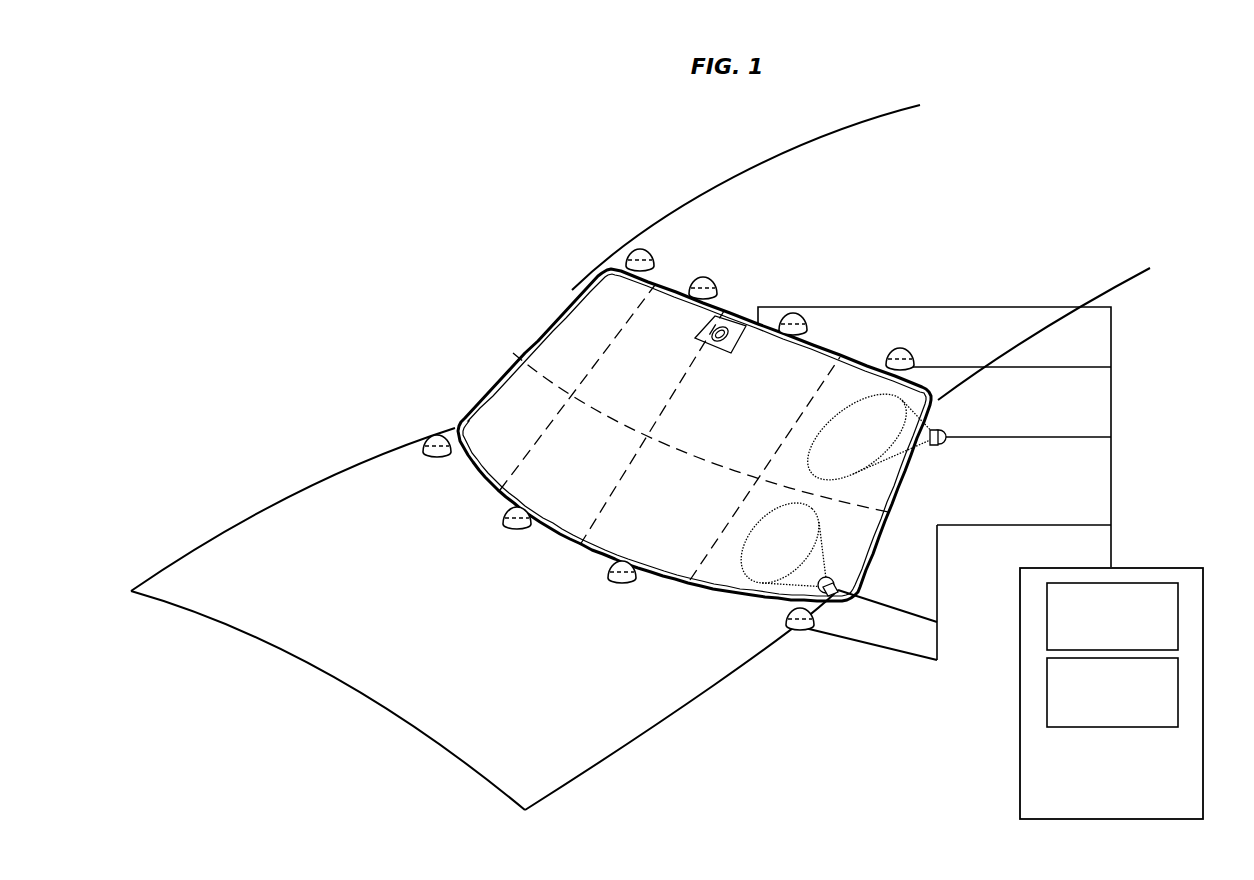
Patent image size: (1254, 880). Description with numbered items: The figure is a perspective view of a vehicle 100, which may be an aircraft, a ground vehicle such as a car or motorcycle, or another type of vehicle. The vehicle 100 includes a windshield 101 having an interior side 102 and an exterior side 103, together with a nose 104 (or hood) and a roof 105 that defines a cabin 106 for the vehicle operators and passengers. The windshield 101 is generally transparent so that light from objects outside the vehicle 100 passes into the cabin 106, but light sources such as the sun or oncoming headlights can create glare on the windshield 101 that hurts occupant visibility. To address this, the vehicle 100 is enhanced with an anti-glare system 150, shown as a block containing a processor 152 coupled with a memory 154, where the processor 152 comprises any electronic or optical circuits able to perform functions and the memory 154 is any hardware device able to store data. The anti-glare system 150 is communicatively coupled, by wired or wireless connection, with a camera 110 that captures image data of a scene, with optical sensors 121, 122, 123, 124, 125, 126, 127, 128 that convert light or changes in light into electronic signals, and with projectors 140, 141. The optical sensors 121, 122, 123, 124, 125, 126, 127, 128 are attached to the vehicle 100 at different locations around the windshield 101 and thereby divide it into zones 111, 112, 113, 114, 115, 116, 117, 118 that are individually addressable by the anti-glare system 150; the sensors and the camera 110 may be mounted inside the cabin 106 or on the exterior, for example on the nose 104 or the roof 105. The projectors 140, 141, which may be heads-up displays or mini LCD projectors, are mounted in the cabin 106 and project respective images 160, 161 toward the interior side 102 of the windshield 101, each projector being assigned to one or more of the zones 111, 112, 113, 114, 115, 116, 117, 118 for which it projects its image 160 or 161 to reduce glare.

The vehicle 100 is at (358, 220).
The windshield 101 is at (665, 428).
The interior side 102 is at (578, 312).
The exterior side 103 is at (558, 304).
The nose 104 is at (304, 494).
The roof 105 is at (758, 161).
The cabin 106 is at (1082, 258).
The camera 110 is at (720, 314).
The zone 111 is at (467, 439).
The zone 112 is at (524, 496).
The zone 113 is at (604, 539).
The zone 114 is at (703, 578).
The zone 115 is at (761, 476).
The zone 116 is at (663, 437).
The zone 117 is at (578, 401).
The zone 118 is at (524, 358).
The optical sensor 121 is at (437, 436).
The optical sensor 122 is at (504, 519).
The optical sensor 123 is at (608, 568).
The optical sensor 124 is at (788, 613).
The optical sensor 125 is at (900, 350).
The optical sensor 126 is at (808, 323).
The optical sensor 127 is at (704, 279).
The optical sensor 128 is at (640, 251).
The projector 140 is at (943, 444).
The projector 141 is at (836, 580).
The anti-glare system 150 is at (1097, 806).
The processor 152 is at (1097, 640).
The memory 154 is at (1097, 717).
The image 160 is at (836, 414).
The image 161 is at (757, 525).